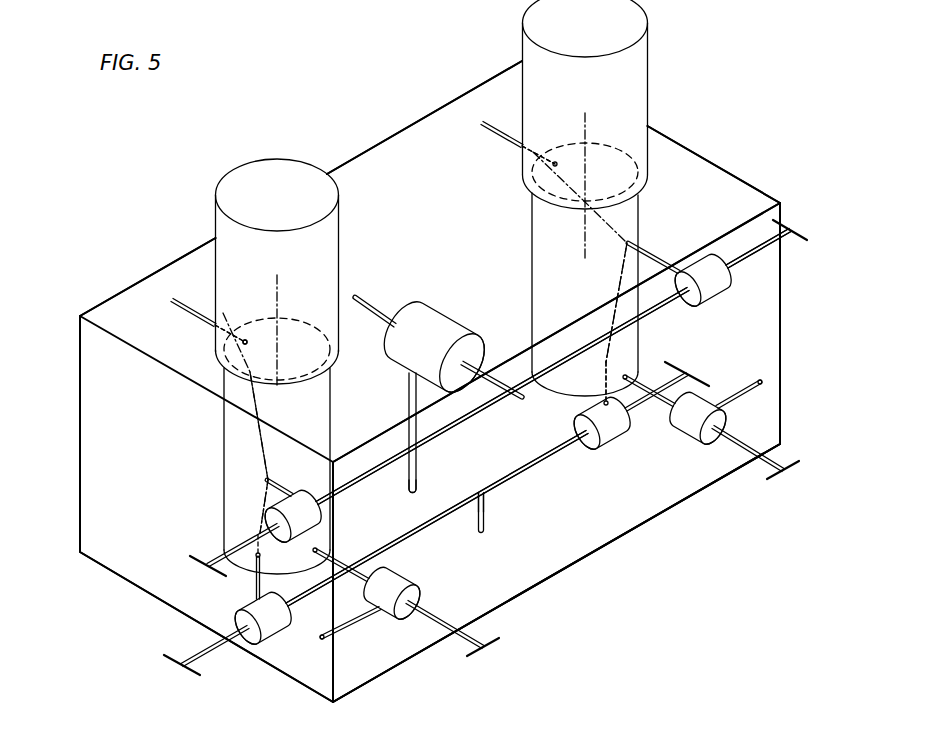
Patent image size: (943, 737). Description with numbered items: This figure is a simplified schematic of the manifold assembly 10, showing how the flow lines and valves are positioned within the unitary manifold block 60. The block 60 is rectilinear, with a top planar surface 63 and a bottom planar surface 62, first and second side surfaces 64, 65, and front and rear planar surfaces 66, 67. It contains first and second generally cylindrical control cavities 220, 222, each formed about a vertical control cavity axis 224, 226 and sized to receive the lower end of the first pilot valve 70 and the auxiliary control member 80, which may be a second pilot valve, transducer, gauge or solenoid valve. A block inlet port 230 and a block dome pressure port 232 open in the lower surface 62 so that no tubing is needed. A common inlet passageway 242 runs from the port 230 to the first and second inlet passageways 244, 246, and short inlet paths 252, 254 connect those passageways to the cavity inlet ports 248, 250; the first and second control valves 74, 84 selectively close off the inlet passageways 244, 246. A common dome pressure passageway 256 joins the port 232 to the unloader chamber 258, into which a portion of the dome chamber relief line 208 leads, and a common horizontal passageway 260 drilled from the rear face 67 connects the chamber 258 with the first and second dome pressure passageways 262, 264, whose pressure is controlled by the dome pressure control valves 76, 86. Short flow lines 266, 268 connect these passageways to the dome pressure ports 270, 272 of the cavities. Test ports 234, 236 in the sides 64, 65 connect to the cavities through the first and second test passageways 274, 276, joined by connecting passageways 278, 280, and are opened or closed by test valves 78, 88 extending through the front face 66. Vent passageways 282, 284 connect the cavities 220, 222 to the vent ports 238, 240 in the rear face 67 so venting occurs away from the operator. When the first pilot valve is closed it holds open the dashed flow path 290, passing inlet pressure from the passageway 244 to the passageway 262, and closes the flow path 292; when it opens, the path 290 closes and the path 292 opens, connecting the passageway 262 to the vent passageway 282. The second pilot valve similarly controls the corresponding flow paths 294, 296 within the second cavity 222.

The manifold assembly 10 is at (496, 62).
The unitary manifold block 60 is at (765, 348).
The bottom planar surface 62 is at (548, 575).
The top planar surface 63 is at (418, 143).
The first side surface 64 is at (95, 390).
The second side surface 65 is at (720, 165).
The front planar surface 66 is at (680, 490).
The rear planar surface 67 is at (372, 147).
The first pilot valve 70 is at (340, 233).
The auxiliary control member 80 is at (648, 60).
The first control valve 74 is at (272, 638).
The first dome pressure control valve 76 is at (312, 522).
The first test valve 78 is at (400, 582).
The second control valve 84 is at (612, 440).
The second dome pressure control valve 86 is at (722, 292).
The second test valve 88 is at (730, 428).
The dome chamber relief line 208 is at (363, 295).
The first control cavity 220 is at (230, 460).
The second control cavity 222 is at (532, 253).
The first control cavity axis 224 is at (280, 290).
The second control cavity axis 226 is at (586, 125).
The block inlet port 230 is at (484, 533).
The block dome pressure port 232 is at (418, 494).
The first test port 234 is at (320, 640).
The second test port 236 is at (764, 382).
The first vent port 238 is at (172, 300).
The second vent port 240 is at (478, 128).
The common inlet passageway 242 is at (486, 499).
The first inlet passageway 244 is at (406, 536).
The second inlet passageway 246 is at (553, 452).
The first control cavity inlet port 248 is at (258, 553).
The second control cavity inlet port 250 is at (612, 360).
The first short inlet path 252 is at (255, 586).
The second short inlet path 254 is at (612, 371).
The common dome pressure passageway 256 is at (408, 391).
The unloader chamber 258 is at (437, 315).
The common horizontal passageway 260 is at (500, 378).
The first dome pressure passageway 262 is at (481, 410).
The second dome pressure passageway 264 is at (534, 380).
The first short flow line 266 is at (287, 491).
The second short flow line 268 is at (667, 260).
The first dome pressure port 270 is at (273, 480).
The second dome pressure port 272 is at (631, 243).
The first test passageway 274 is at (380, 562).
The second test passageway 276 is at (664, 402).
The first connecting passageway 278 is at (364, 613).
The second connecting passageway 280 is at (740, 395).
The first vent passageway 282 is at (190, 314).
The second vent passageway 284 is at (508, 142).
The first inlet flow path 290 is at (264, 507).
The first vent flow path 292 is at (253, 410).
The second inlet flow path 294 is at (612, 315).
The second vent flow path 296 is at (640, 205).